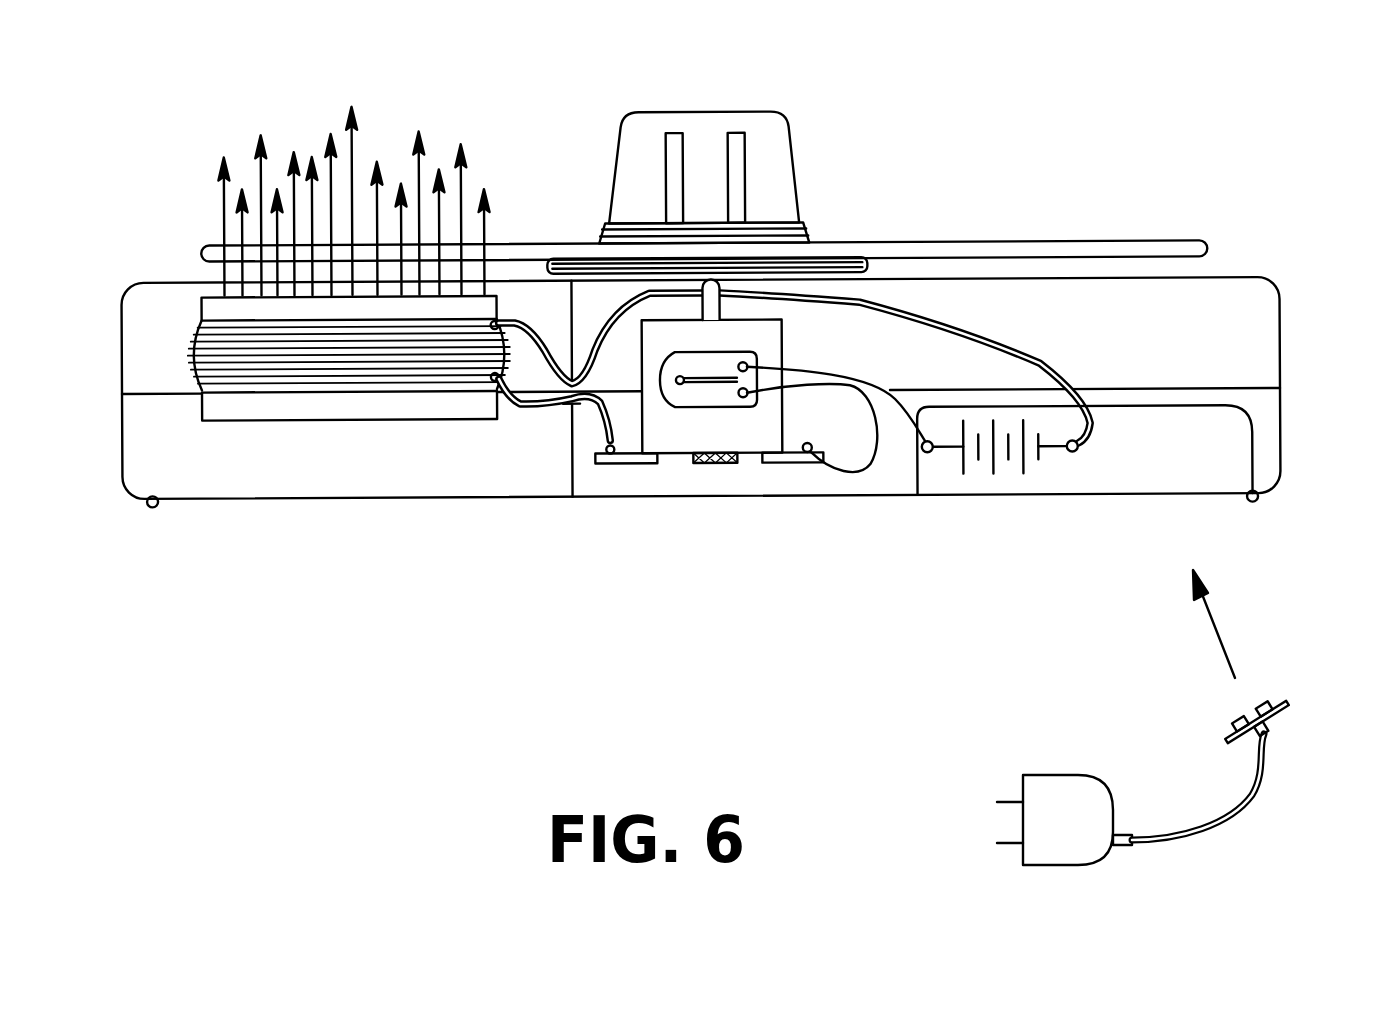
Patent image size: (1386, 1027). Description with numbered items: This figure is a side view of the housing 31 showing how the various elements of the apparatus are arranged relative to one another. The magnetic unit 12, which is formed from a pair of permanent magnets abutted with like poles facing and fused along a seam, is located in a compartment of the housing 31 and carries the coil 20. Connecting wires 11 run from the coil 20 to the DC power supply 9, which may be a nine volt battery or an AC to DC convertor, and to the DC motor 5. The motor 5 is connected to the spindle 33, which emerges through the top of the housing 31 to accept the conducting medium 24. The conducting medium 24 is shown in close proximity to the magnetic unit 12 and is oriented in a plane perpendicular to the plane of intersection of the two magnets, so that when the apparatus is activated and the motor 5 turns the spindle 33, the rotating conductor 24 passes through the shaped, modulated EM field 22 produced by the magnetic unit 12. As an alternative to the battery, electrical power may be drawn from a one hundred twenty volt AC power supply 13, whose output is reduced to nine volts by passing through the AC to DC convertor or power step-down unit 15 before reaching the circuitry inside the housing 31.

The housing 31 is at (1286, 203).
The conducting medium 24 is at (545, 215).
The shaped magnetic field 22 is at (192, 203).
The coil 20 is at (190, 362).
The magnetic unit 12 is at (358, 461).
The connecting wire 11 is at (520, 352).
The DC motor 5 is at (802, 337).
The spindle 33 is at (790, 272).
The DC power supply 9 is at (1205, 461).
The AC power supply 13 is at (992, 842).
The power step-down unit 15 is at (1276, 740).